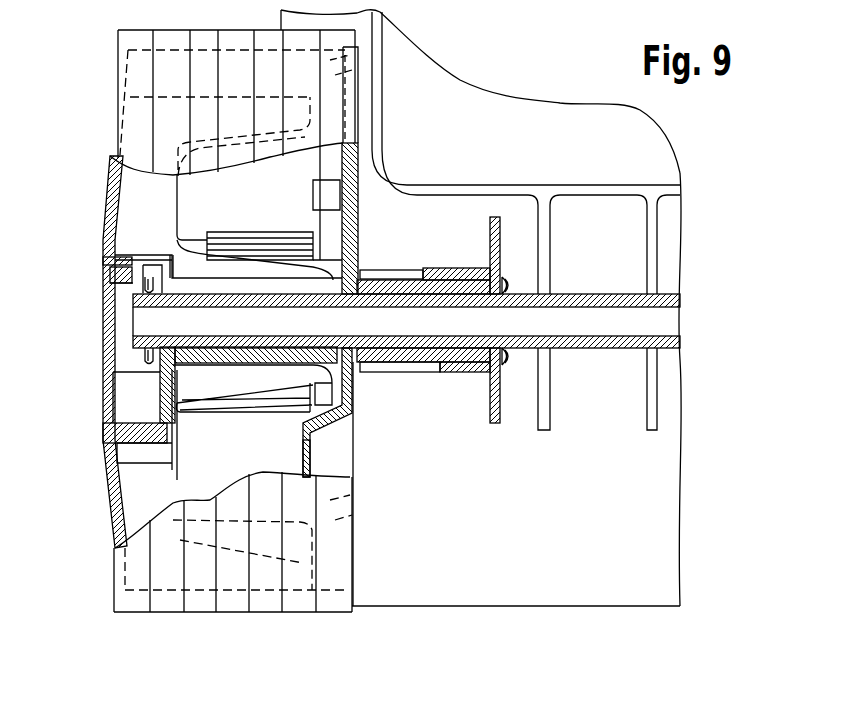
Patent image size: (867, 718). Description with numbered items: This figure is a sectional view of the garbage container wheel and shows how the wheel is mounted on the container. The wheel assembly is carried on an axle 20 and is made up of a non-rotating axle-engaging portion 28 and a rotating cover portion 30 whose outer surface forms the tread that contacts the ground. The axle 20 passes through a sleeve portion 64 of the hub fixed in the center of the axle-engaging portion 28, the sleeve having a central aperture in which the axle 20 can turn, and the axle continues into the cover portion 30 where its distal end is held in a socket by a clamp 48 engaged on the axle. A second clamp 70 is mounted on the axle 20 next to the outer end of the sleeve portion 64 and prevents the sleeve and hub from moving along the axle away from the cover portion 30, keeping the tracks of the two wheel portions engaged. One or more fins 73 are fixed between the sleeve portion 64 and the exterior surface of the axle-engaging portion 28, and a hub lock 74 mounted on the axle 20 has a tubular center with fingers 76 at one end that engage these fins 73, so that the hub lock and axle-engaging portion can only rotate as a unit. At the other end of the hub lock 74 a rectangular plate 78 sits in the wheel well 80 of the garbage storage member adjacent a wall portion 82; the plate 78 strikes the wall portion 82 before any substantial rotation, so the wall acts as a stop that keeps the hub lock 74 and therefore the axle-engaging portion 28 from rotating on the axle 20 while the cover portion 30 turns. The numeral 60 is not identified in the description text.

The axle 20 is at (665, 317).
The axle-engaging portion 28 is at (405, 268).
The cover portion 30 is at (204, 60).
The clamp 48 is at (147, 356).
The fan housing 60 is at (664, 4).
The sleeve portion 64 is at (438, 365).
The clamp 70 is at (508, 284).
The fins 73 is at (367, 385).
The hub lock 74 is at (504, 418).
The fingers 76 is at (362, 196).
The rectangular plate 78 is at (500, 220).
The wheel well 80 is at (628, 493).
The wall portion 82 is at (475, 210).